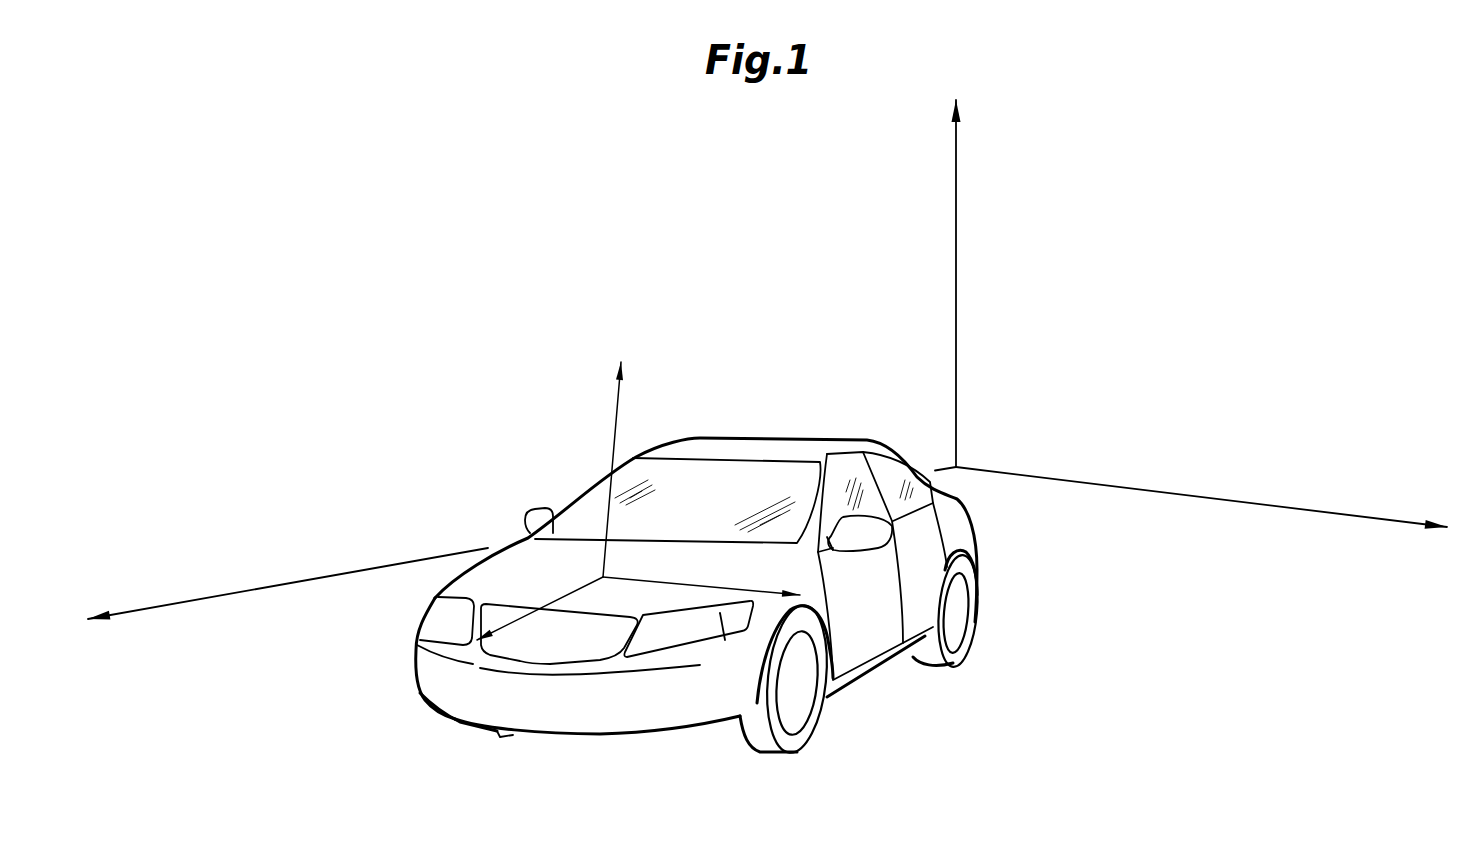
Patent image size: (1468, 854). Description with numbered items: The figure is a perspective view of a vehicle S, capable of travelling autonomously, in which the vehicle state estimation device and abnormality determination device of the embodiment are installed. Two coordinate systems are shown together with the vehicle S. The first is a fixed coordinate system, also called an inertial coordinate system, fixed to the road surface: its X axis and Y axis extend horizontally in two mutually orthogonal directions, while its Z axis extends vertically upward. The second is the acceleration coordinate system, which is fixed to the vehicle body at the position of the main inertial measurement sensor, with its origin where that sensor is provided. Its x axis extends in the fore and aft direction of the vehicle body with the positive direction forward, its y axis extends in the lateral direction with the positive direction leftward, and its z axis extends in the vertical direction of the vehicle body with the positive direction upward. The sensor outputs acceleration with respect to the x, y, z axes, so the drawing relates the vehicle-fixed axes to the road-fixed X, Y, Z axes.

The vehicle S is at (842, 424).
The X axis X is at (522, 543).
The Y axis Y is at (1201, 498).
The Z axis Z is at (967, 283).
The x axis x is at (540, 615).
The y axis y is at (701, 580).
The z axis z is at (620, 469).